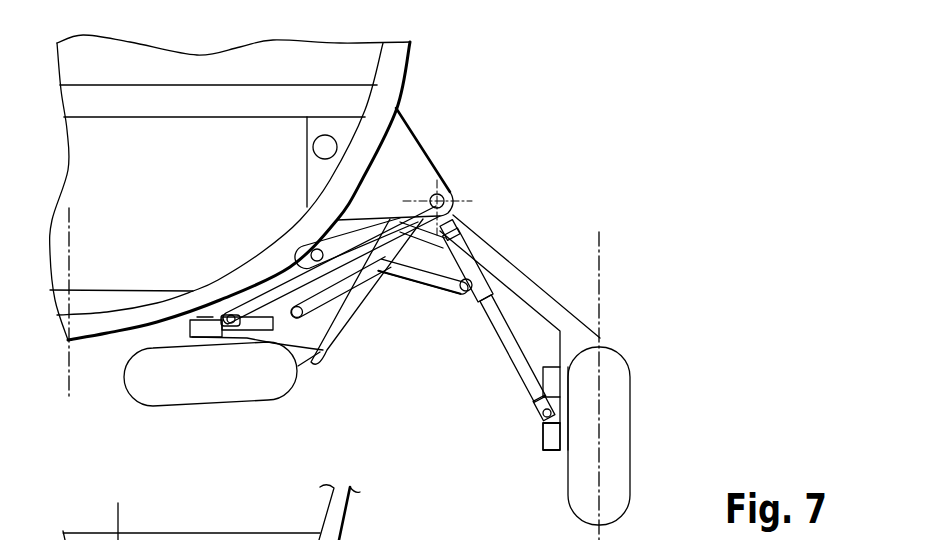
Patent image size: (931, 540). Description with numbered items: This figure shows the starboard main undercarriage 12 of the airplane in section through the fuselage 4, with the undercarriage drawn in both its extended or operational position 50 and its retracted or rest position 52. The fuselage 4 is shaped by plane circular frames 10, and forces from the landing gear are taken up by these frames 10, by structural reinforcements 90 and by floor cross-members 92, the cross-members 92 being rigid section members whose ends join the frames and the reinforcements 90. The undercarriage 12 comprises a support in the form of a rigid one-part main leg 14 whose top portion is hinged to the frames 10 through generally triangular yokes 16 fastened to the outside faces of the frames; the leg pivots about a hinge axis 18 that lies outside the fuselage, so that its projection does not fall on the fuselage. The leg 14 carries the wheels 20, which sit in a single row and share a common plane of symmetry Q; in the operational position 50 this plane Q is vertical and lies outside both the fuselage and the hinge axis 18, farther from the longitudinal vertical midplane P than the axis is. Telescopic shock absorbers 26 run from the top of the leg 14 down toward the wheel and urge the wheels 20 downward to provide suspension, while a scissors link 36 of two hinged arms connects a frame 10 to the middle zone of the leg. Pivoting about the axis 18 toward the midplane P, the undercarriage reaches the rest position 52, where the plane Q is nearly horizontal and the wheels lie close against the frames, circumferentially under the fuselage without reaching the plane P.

The fuselage 4 is at (414, 43).
The strength members (frames) 10 is at (400, 78).
The main undercarriage 12 is at (475, 332).
The support (main leg) 14 is at (507, 277).
The yoke 16 is at (399, 127).
The hinge axis 18 is at (452, 193).
The wheel 20 is at (620, 422).
The shock absorber 26 is at (520, 365).
The scissors link 36 is at (405, 277).
The extended (operational) position 50 is at (648, 421).
The retracted (rest) position 52 is at (153, 424).
The structural reinforcement 90 is at (323, 123).
The floor cross-member 92 is at (258, 100).
The longitudinal vertical midplane P is at (73, 223).
The plane of symmetry of the wheel Q is at (599, 305).